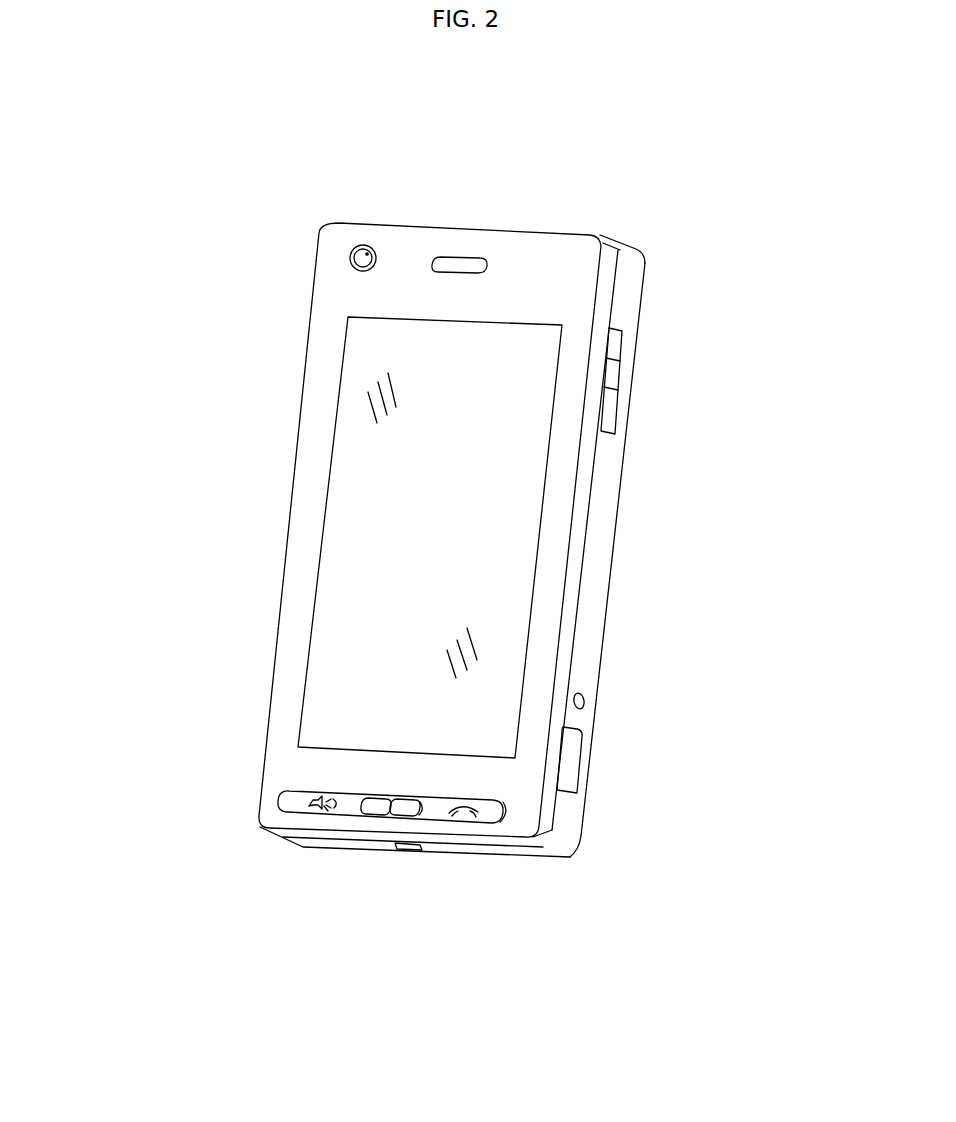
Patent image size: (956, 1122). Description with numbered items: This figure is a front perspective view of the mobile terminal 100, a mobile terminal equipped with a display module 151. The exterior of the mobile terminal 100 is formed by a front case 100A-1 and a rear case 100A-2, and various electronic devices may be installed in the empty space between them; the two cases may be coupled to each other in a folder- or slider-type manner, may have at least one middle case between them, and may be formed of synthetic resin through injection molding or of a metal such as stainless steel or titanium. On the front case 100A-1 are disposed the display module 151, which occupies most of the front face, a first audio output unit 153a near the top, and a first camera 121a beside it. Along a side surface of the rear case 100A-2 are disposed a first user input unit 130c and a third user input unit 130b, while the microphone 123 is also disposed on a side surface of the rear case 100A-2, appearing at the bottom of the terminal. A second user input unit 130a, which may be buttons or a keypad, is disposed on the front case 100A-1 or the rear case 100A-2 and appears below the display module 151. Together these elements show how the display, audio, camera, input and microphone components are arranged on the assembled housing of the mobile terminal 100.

The mobile terminal 100 is at (240, 226).
The front case 100A-1 is at (607, 247).
The rear case 100A-2 is at (628, 285).
The first camera 121a is at (361, 251).
The first audio output unit 153a is at (460, 262).
The display module 151 is at (352, 518).
The second user input unit 130a is at (317, 790).
The third user input unit 130b is at (623, 377).
The first user input unit 130c is at (580, 744).
The microphone 123 is at (412, 851).